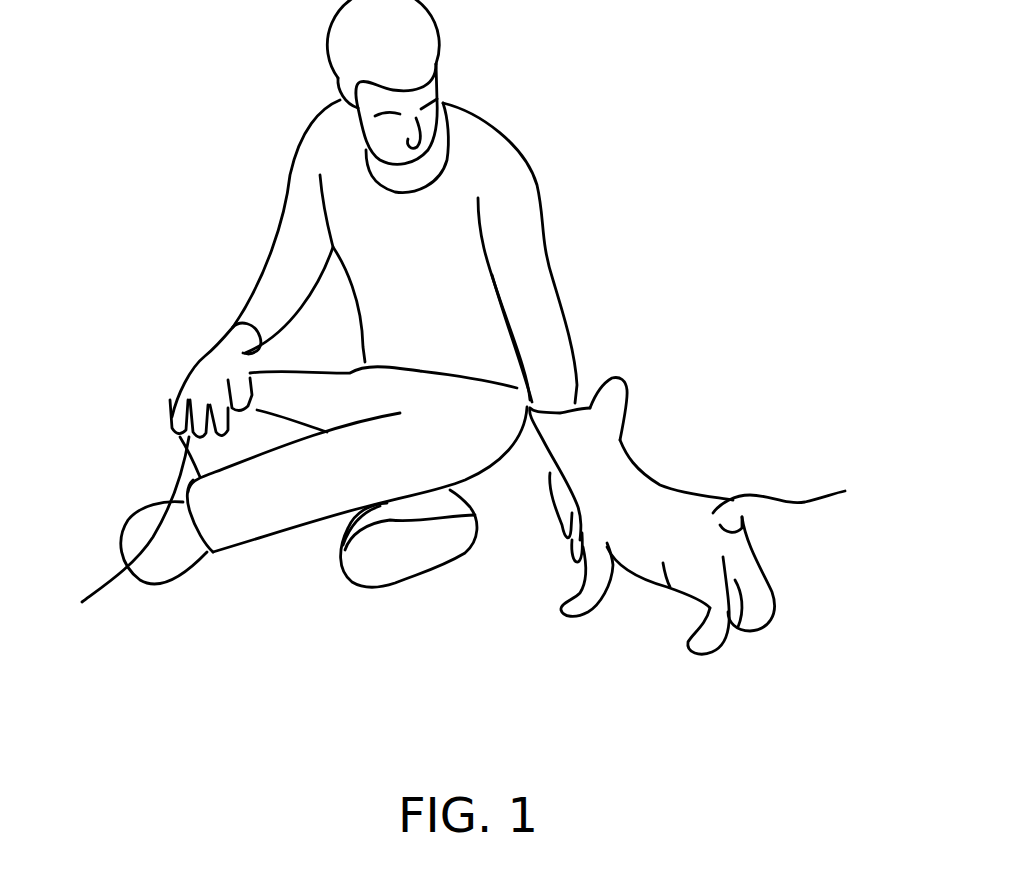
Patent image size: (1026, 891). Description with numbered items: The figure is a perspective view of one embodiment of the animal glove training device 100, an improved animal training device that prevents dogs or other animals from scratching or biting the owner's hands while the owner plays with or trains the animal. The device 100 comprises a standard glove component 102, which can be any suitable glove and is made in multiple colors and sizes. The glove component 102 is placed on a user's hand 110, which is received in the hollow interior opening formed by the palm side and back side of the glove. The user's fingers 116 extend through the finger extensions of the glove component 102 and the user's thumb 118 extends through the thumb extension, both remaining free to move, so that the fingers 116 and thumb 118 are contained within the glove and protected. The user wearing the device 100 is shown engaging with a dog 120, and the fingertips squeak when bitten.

The animal glove training device 100 is at (666, 389).
The glove component 102 is at (548, 512).
The user's hand 110 is at (218, 360).
The user's fingers 116 is at (173, 409).
The user's thumb 118 is at (113, 534).
The dog 120 is at (840, 491).